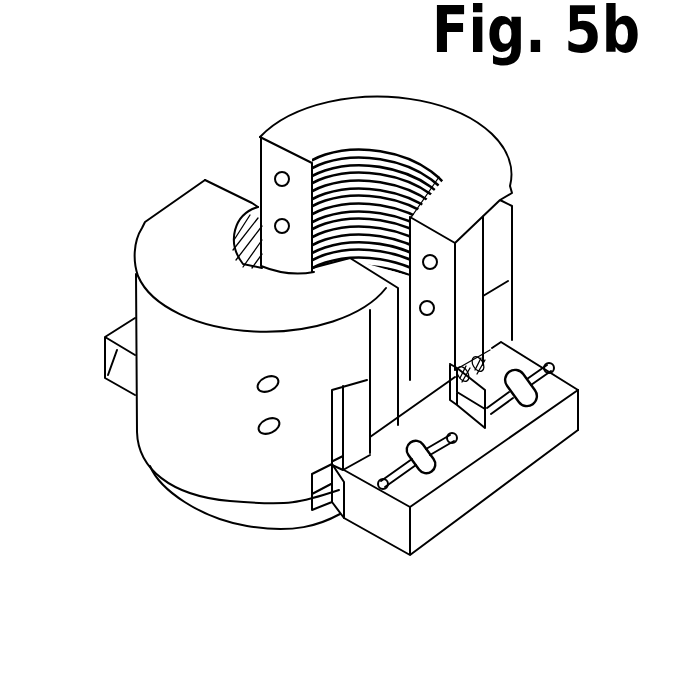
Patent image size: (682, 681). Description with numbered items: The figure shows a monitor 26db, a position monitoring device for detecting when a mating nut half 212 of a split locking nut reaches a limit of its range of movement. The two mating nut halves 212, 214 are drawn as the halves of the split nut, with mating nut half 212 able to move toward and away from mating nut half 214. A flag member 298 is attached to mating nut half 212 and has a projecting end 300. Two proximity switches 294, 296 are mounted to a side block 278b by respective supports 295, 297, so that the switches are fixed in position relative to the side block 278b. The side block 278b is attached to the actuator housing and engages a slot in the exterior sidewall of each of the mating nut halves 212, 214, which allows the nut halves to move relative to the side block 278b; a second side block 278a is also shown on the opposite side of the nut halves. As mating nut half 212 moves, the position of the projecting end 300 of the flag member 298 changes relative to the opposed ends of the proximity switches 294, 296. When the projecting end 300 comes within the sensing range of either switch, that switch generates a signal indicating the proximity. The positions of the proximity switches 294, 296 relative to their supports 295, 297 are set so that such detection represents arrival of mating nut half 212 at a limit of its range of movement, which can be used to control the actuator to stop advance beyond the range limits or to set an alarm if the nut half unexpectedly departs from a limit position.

The mating nut half 212 is at (419, 138).
The mating nut half 214 is at (222, 287).
The first lug 278a is at (107, 377).
The side block 278b is at (359, 508).
The proximity switch 294 is at (427, 542).
The support 295 is at (436, 460).
The proximity switch 296 is at (580, 408).
The support 297 is at (579, 431).
The flag member 298 is at (507, 349).
The projecting end 300 is at (488, 422).
The monitor 26db is at (567, 289).